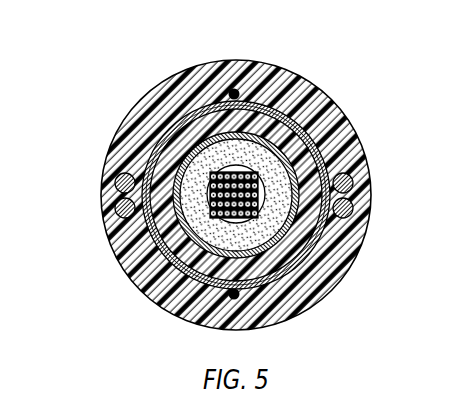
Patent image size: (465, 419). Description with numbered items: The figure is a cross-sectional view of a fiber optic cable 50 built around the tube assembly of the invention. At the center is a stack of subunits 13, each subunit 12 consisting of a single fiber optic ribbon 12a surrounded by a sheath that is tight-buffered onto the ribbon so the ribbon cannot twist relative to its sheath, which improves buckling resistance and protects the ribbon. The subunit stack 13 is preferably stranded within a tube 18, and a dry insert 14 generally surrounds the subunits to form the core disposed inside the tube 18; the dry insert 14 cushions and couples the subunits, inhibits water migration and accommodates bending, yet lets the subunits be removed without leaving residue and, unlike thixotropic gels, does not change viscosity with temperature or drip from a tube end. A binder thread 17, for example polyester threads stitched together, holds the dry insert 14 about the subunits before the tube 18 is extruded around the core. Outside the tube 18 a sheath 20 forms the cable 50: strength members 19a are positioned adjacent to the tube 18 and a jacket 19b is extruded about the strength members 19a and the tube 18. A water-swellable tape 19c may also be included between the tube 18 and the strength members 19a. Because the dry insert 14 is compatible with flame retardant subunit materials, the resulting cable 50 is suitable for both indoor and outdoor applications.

The cable 50 is at (160, 71).
The sheath 20 is at (130, 116).
The tube 18 is at (255, 112).
The binder thread 17 is at (233, 89).
The stack of subunits 13 is at (248, 168).
The dry insert 14 is at (288, 167).
The subunit 12 is at (243, 214).
The fiber optic ribbon 12a is at (211, 198).
The strength members 19a is at (110, 168).
The jacket 19b is at (128, 248).
The water-swellable tape 19c is at (305, 242).